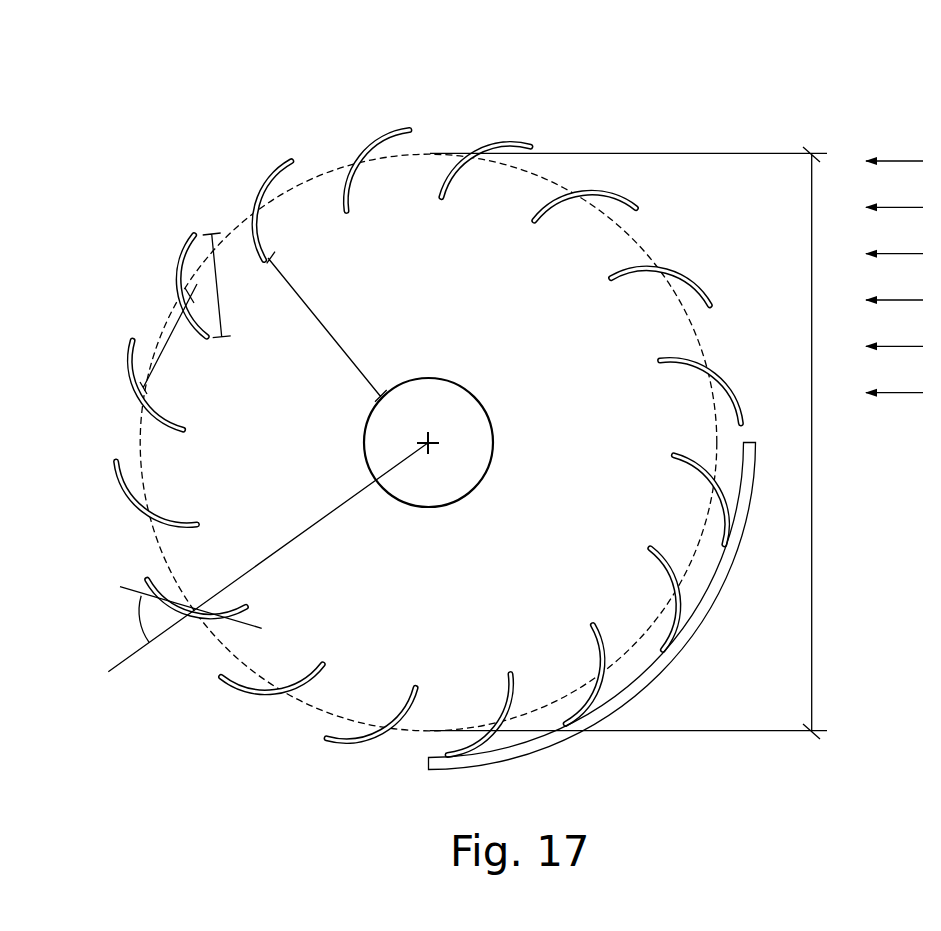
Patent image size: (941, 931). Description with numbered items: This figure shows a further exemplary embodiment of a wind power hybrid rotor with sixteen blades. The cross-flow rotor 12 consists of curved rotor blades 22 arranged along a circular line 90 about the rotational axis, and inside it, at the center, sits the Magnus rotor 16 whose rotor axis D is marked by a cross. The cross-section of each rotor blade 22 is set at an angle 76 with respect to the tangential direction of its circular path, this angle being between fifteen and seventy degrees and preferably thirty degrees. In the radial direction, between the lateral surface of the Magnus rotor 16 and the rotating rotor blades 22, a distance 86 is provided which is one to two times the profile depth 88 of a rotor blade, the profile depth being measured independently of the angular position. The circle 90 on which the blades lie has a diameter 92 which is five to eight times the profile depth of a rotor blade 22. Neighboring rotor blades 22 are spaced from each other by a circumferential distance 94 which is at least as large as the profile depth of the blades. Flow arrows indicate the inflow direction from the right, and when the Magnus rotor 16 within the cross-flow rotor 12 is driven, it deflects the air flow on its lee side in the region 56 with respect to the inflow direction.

The cross-flow rotor 12 is at (458, 120).
The Magnus rotor 16 is at (446, 370).
The rotor axis D is at (432, 442).
The rotor blade 22 is at (268, 178).
The region of deflected air flow 56 is at (540, 747).
The angle 76 is at (138, 597).
The distance 86 is at (333, 337).
The profile depth 88 is at (218, 303).
The circular line 90 is at (142, 438).
The diameter 92 is at (812, 514).
The circumferential distance 94 is at (174, 318).